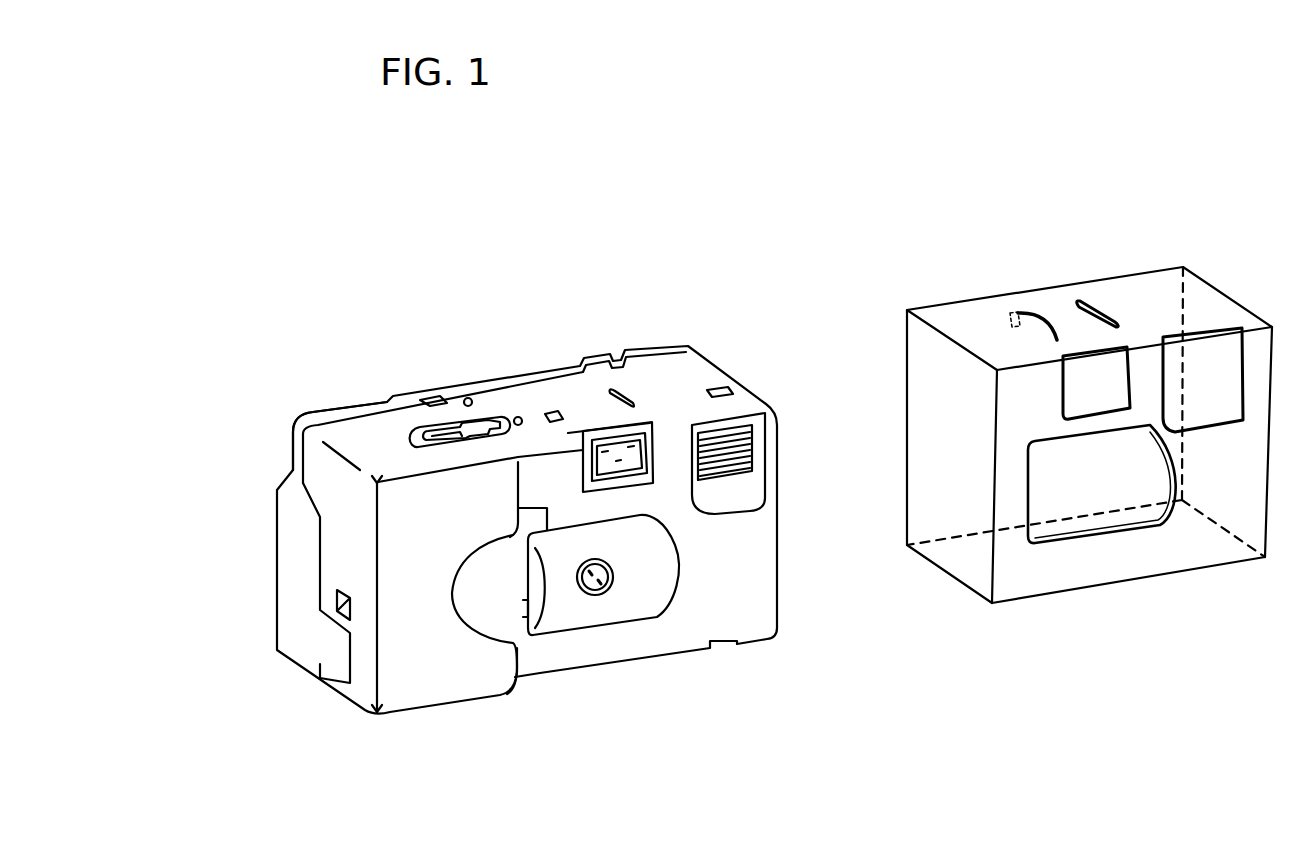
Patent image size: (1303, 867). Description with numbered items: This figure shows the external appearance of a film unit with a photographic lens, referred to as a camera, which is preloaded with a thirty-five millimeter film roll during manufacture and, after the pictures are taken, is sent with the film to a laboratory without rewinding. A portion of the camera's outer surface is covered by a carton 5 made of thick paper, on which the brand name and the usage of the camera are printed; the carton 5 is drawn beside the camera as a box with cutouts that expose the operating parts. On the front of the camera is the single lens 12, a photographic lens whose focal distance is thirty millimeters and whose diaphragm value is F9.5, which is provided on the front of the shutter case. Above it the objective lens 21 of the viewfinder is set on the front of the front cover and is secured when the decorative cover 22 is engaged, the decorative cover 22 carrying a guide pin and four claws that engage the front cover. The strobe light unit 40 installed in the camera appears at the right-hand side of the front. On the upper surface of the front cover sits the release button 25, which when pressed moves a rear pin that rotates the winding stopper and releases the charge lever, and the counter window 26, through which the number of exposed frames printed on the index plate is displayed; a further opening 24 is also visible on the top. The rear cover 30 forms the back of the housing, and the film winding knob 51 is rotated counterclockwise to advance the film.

The carton 5 is at (1052, 287).
The single lens 12 is at (593, 590).
The objective lens 21 is at (616, 450).
The decorative cover 22 is at (654, 618).
The film counter window 24 is at (545, 412).
The release button 25 is at (413, 442).
The counter window 26 is at (618, 402).
The rear cover 30 is at (277, 580).
The strobe light unit 40 is at (732, 443).
The film winding knob 51 is at (312, 418).